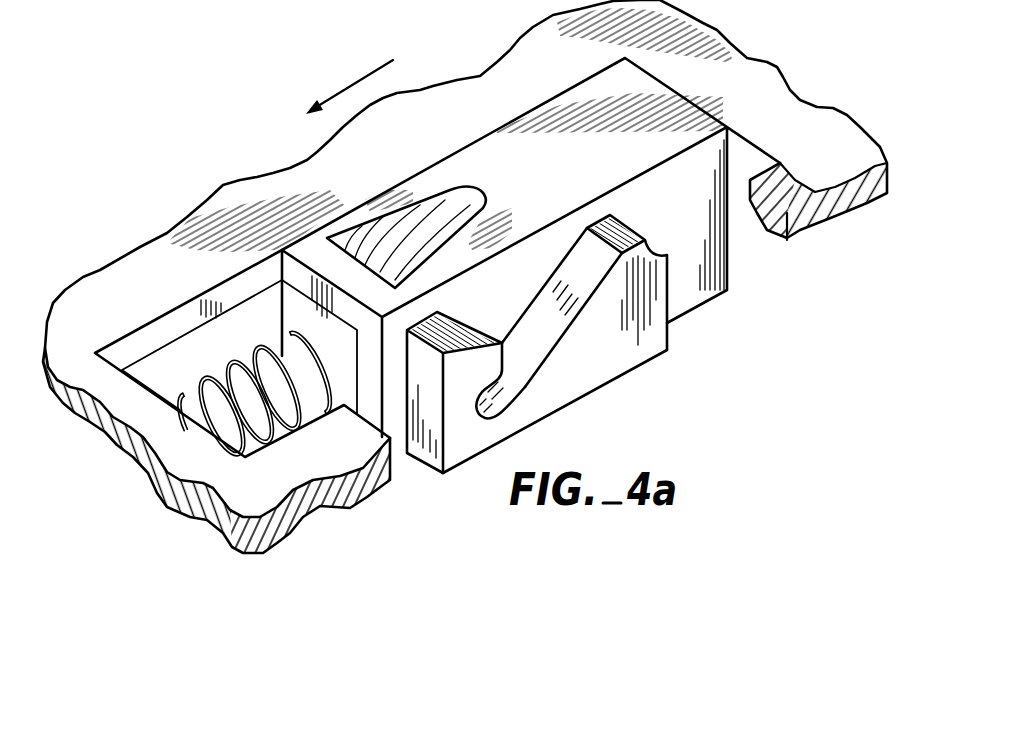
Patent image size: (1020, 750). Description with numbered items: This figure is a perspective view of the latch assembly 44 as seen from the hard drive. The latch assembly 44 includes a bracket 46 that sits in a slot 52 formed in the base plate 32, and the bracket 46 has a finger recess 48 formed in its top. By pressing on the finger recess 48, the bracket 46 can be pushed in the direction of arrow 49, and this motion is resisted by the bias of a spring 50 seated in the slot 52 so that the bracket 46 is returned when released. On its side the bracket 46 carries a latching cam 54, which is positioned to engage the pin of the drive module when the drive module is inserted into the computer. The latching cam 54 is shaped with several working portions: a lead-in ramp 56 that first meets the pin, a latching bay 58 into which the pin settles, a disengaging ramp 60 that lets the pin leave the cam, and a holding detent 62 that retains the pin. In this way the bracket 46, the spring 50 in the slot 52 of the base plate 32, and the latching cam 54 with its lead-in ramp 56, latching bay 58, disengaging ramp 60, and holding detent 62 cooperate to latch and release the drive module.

The base plate 32 is at (257, 197).
The latch assembly 44 is at (604, 334).
The bracket 46 is at (675, 298).
The finger recess 48 is at (463, 197).
The arrow 49 is at (370, 73).
The spring 50 is at (263, 450).
The slot 52 is at (190, 365).
The latching cam 54 is at (552, 393).
The lead-in ramp 56 is at (470, 327).
The latching bay 58 is at (497, 405).
The disengaging ramp 60 is at (542, 340).
The holding detent 62 is at (660, 250).